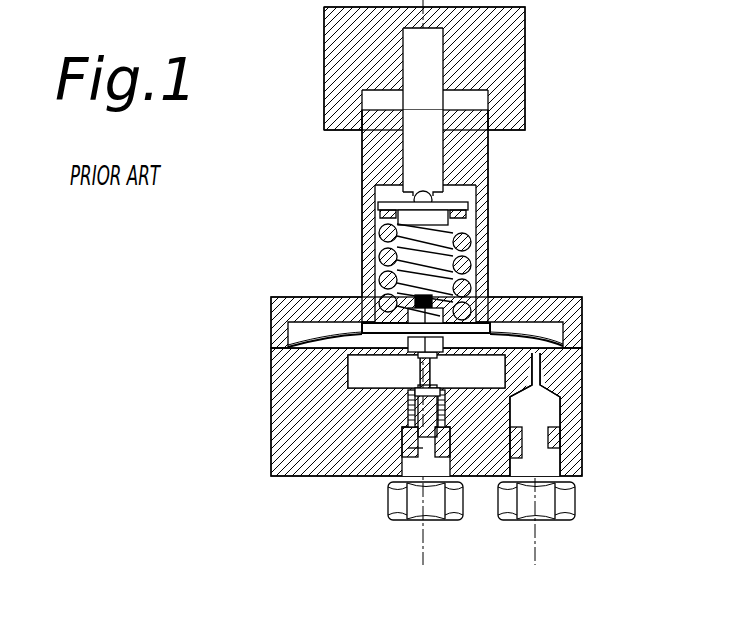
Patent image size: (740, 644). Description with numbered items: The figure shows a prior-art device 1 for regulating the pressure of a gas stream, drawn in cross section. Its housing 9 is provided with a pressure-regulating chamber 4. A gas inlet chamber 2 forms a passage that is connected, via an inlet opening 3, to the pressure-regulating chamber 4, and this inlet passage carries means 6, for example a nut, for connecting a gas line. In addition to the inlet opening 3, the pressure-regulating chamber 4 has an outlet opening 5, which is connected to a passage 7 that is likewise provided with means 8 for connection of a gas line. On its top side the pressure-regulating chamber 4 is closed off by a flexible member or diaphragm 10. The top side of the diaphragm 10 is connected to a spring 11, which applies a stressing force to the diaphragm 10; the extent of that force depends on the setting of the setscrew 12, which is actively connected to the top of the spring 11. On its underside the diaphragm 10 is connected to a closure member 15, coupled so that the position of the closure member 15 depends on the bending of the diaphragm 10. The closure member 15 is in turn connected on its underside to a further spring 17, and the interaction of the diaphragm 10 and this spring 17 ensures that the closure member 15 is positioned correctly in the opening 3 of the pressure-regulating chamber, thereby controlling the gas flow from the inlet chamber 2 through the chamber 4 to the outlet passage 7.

The device 1 is at (427, 290).
The gas inlet chamber 2 is at (447, 438).
The inlet opening 3 is at (443, 385).
The pressure-regulating chamber 4 is at (370, 370).
The outlet opening 5 is at (535, 368).
The means for connecting a gas line 6 is at (437, 503).
The passage 7 is at (515, 462).
The means for connection of a gas line 8 is at (555, 505).
The housing 9 is at (262, 292).
The diaphragm 10 is at (538, 338).
The spring 11 is at (376, 246).
The setscrew 12 is at (492, 50).
The closure member 15 is at (408, 412).
The spring 17 is at (445, 412).